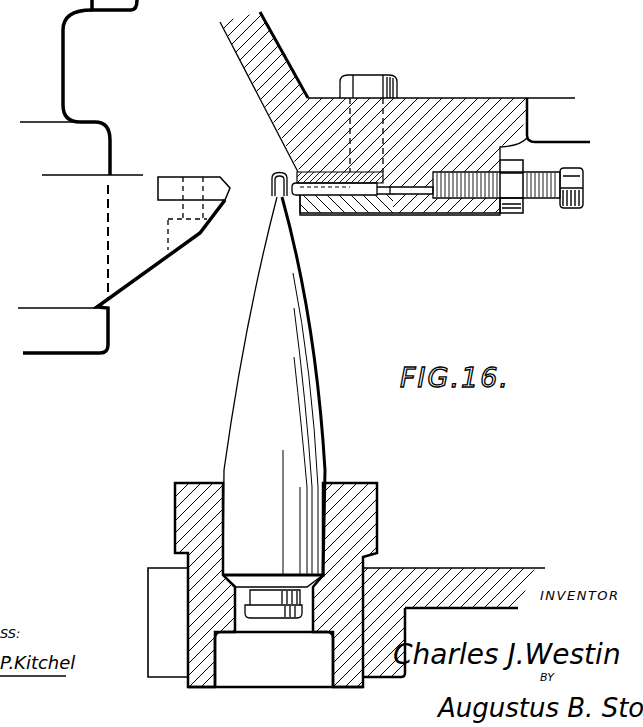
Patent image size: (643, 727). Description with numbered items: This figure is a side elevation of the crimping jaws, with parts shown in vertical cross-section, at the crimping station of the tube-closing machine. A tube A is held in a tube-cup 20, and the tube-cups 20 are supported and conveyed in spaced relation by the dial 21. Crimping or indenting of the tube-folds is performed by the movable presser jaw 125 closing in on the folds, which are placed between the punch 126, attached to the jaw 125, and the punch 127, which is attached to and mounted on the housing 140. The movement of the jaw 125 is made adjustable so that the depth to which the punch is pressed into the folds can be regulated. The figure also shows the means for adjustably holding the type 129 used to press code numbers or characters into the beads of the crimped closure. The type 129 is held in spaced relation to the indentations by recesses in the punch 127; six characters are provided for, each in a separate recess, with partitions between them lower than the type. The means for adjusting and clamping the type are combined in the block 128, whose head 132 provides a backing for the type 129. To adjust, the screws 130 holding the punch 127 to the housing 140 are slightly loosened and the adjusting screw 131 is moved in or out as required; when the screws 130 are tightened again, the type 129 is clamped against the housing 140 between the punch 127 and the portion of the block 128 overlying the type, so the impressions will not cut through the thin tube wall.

The tube-cup 20 is at (176, 485).
The dial 21 is at (475, 568).
The movable presser jaw 125 is at (137, 268).
The punch 126 is at (172, 177).
The punch 127 is at (398, 213).
The block 128 is at (323, 173).
The type 129 is at (320, 190).
The screws 130 is at (397, 87).
The adjusting screw 131 is at (585, 201).
The head 132 is at (392, 192).
The housing 140 is at (481, 100).
The tube A is at (308, 343).